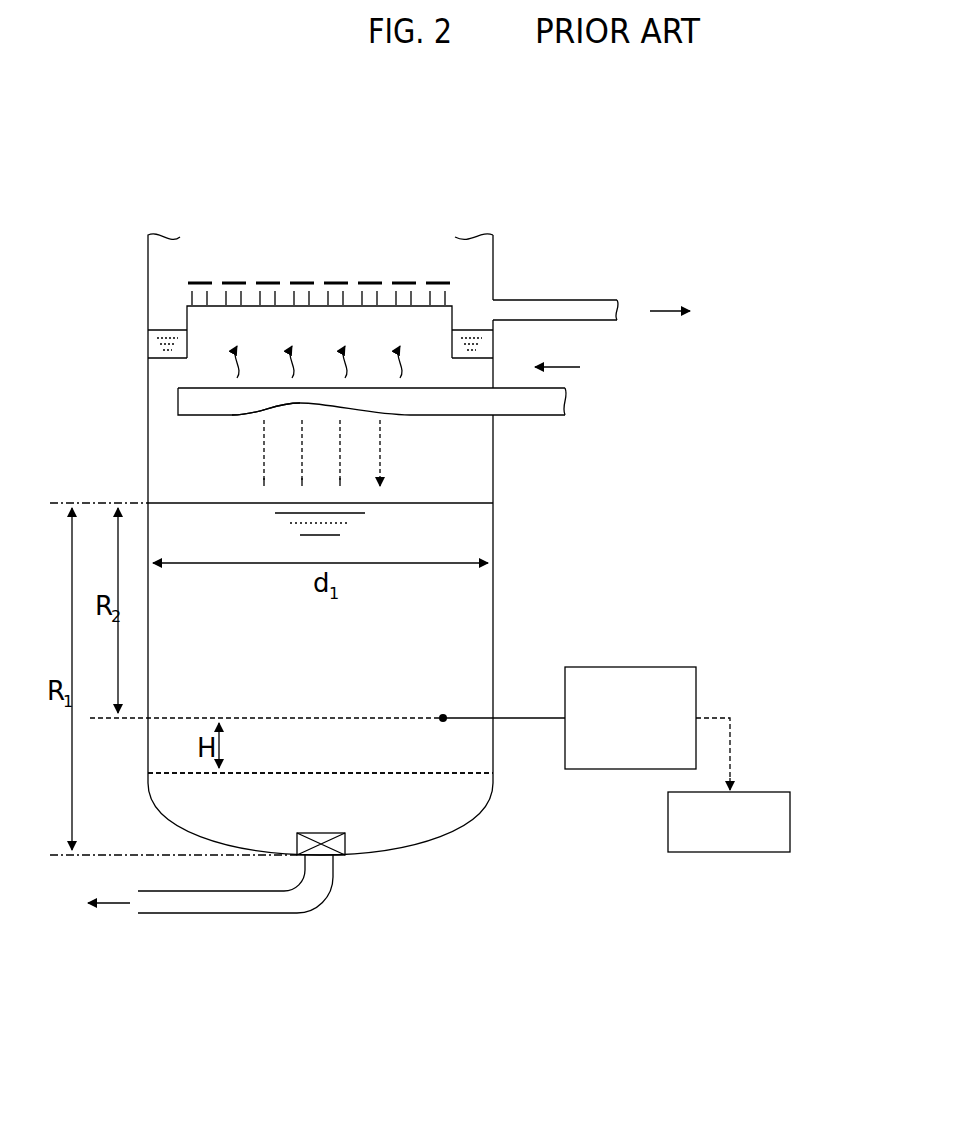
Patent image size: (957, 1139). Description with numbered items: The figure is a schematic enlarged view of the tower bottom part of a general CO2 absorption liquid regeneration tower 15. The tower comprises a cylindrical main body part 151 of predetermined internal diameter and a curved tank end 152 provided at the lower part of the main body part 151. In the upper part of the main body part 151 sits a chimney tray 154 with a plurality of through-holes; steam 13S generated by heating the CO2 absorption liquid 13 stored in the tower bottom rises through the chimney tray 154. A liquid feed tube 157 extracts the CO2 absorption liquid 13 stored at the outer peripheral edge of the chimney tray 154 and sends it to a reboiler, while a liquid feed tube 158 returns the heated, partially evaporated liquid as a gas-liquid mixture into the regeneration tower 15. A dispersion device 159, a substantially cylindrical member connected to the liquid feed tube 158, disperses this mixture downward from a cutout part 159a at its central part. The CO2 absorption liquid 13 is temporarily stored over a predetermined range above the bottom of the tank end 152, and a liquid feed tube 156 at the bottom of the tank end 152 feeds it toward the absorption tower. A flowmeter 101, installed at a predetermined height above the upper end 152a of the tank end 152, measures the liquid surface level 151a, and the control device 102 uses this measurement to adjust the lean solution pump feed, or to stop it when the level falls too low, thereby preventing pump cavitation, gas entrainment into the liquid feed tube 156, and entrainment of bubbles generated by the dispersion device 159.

The CO2 absorption liquid regeneration tower 15 is at (500, 258).
The main body part 151 is at (497, 540).
The tank end 152 is at (418, 845).
The chimney tray 154 is at (232, 283).
The steam 13S is at (398, 357).
The liquid feed tube 157 is at (560, 300).
The liquid feed tube 158 is at (535, 416).
The dispersion device 159 is at (178, 402).
The cutout part 159a is at (255, 415).
The CO2 absorption liquid 13 is at (655, 310).
The control liquid surface level 151a is at (405, 718).
The upper end of tank end 152a is at (478, 773).
The flowmeter 101 is at (650, 667).
The control device 102 is at (752, 792).
The liquid feed tube 156 is at (298, 903).